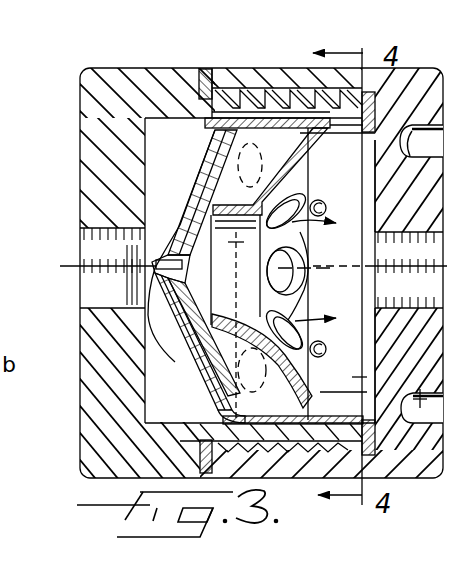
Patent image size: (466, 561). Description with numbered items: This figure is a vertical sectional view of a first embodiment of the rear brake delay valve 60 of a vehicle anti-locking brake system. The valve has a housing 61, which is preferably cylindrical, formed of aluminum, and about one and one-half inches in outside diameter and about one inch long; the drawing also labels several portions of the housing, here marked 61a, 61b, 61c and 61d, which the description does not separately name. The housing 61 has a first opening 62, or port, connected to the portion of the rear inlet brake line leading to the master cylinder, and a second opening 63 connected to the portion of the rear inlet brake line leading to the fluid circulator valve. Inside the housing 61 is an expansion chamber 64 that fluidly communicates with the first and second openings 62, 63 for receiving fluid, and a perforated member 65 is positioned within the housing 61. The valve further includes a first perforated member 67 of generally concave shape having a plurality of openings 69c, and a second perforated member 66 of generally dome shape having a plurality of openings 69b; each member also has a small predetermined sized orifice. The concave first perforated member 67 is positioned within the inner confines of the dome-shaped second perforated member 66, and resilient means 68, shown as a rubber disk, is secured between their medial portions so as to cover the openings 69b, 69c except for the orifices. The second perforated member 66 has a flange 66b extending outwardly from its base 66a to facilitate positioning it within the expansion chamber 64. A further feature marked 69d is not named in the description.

The rear brake delay valve 60 is at (56, 75).
The housing 61 is at (108, 57).
The housing upper right portion 61a is at (427, 113).
The housing left wall 61b is at (86, 130).
The housing lower right portion 61c is at (400, 148).
The seal blocks 61d is at (204, 70).
The first opening 62 is at (428, 228).
The second opening 63 is at (80, 228).
The expansion chamber 64 is at (148, 402).
The perforated member 65 is at (207, 129).
The second perforated member 66 is at (190, 216).
The base 66a is at (300, 118).
The flange 66b is at (345, 90).
The first perforated member 67 is at (367, 150).
The resilient means 68 is at (217, 153).
The openings 69b is at (212, 172).
The openings 69c is at (294, 290).
The valve member lower portion 69d is at (230, 281).